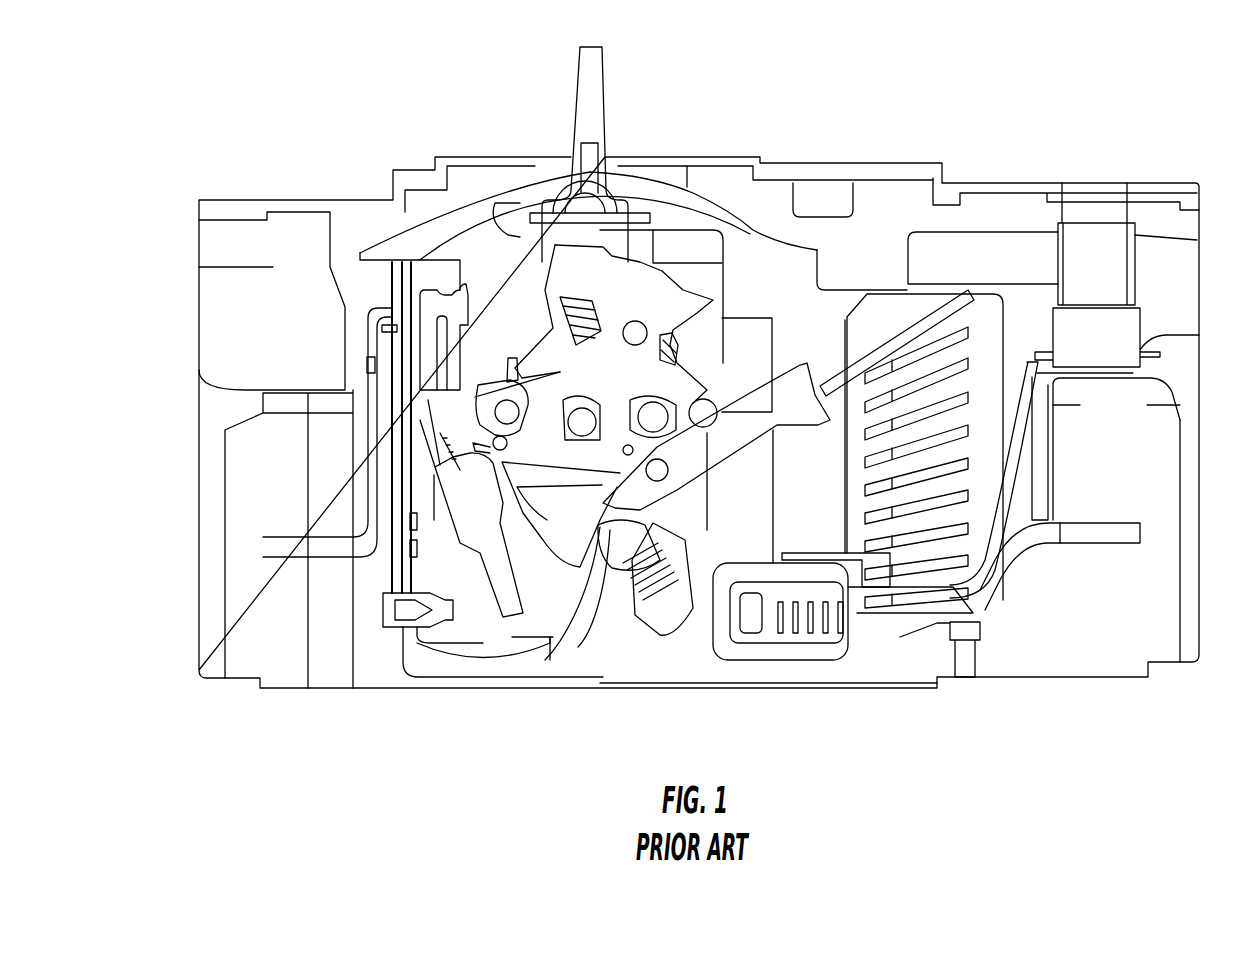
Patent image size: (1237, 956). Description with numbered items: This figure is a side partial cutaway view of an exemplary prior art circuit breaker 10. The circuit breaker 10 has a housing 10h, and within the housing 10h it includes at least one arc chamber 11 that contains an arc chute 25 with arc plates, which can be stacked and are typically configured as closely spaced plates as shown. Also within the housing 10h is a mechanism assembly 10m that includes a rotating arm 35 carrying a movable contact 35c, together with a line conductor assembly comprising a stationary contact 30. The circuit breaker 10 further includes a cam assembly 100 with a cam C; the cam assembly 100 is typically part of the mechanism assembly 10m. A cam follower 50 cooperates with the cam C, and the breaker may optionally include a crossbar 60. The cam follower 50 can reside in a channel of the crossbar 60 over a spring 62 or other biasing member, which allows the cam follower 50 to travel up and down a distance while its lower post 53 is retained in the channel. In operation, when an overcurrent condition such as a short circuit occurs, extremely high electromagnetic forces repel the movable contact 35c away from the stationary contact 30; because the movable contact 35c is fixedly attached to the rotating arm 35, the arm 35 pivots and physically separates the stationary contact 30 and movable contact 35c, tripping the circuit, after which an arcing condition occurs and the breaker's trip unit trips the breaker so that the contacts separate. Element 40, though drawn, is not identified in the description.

The circuit breaker 10 is at (725, 102).
The mechanism assembly 10m is at (500, 312).
The housing 10h is at (470, 160).
The cam assembly 100 is at (603, 288).
The cam C is at (663, 347).
The arc chamber 11 is at (770, 285).
The movable contact 35c is at (833, 384).
The arc chute 25 is at (948, 403).
The lower post 53 is at (660, 540).
The bimetal trip assembly 40 is at (573, 645).
The cam follower 50 is at (637, 590).
The spring 62 is at (665, 605).
The crossbar 60 is at (667, 607).
The rotating arm 35 is at (720, 440).
The stationary contact 30 is at (813, 557).